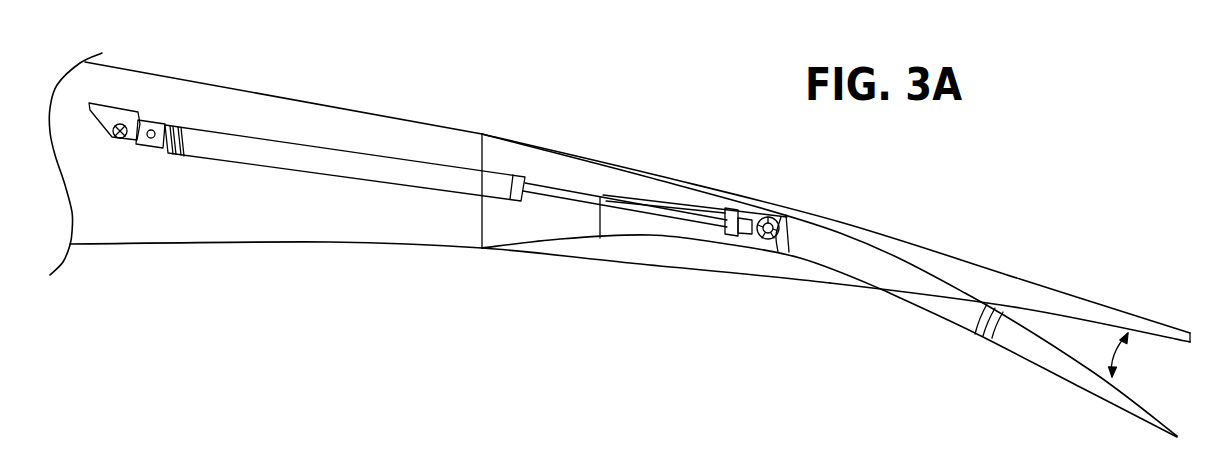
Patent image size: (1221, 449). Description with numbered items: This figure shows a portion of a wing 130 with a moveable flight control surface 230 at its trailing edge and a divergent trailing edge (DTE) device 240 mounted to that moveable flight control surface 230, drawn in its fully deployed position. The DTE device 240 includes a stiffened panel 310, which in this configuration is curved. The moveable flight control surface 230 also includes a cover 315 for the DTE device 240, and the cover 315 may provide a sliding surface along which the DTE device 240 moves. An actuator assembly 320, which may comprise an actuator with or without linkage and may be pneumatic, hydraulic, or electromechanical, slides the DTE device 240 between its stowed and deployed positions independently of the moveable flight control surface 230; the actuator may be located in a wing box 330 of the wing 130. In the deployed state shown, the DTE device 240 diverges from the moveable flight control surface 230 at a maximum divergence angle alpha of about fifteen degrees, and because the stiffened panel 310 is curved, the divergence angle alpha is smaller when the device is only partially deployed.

The wing 130 is at (293, 94).
The moveable flight control surface 230 is at (1057, 288).
The DTE device 240 is at (1020, 360).
The stiffened panel 310 is at (1087, 397).
The cover 315 is at (645, 262).
The actuator assembly 320 is at (250, 163).
The wing box 330 is at (260, 242).
The divergence angle alpha is at (1125, 355).